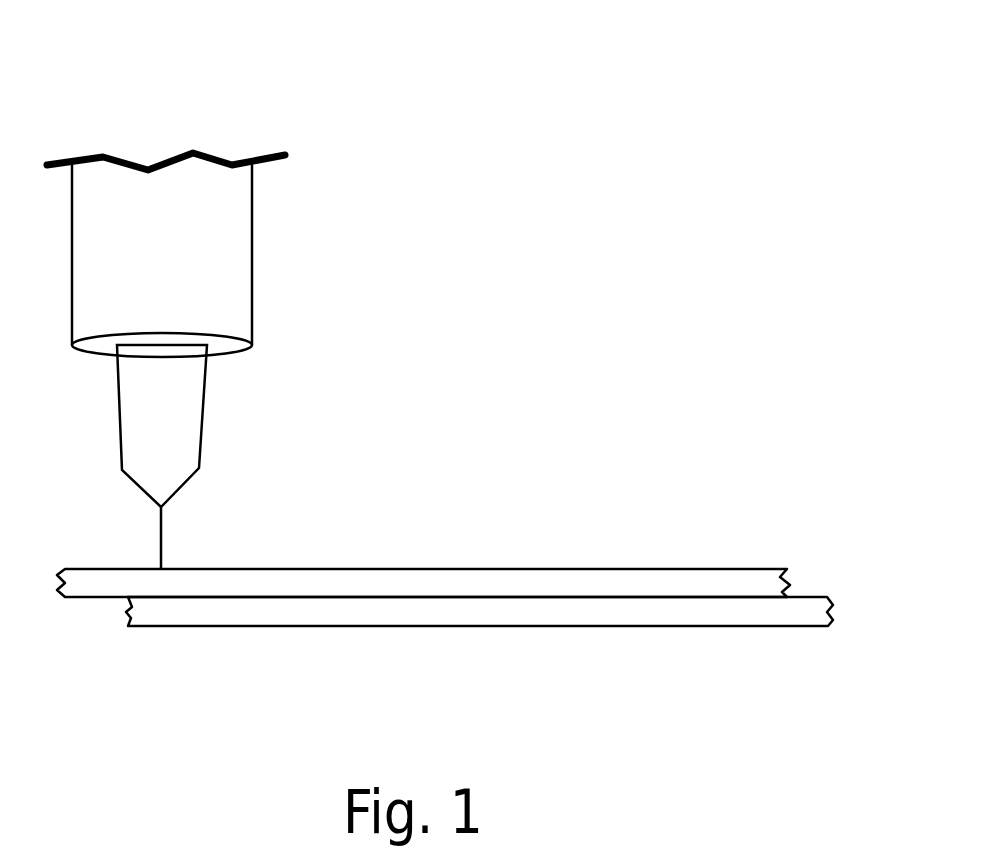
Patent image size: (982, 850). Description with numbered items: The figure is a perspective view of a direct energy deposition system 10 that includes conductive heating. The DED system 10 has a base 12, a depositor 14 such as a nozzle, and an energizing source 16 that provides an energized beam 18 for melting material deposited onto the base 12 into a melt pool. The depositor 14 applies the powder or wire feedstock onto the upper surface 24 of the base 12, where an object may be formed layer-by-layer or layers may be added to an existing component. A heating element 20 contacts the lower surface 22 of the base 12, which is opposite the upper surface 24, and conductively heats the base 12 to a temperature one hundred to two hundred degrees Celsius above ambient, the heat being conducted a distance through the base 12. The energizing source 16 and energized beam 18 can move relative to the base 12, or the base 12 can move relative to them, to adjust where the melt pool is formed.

The DED system 10 is at (541, 62).
The base 12 is at (412, 568).
The depositor 14 is at (205, 402).
The energizing source 16 is at (252, 253).
The energized beam 18 is at (163, 537).
The heating element 20 is at (810, 608).
The lower surface 22 is at (91, 608).
The upper surface 24 is at (585, 560).